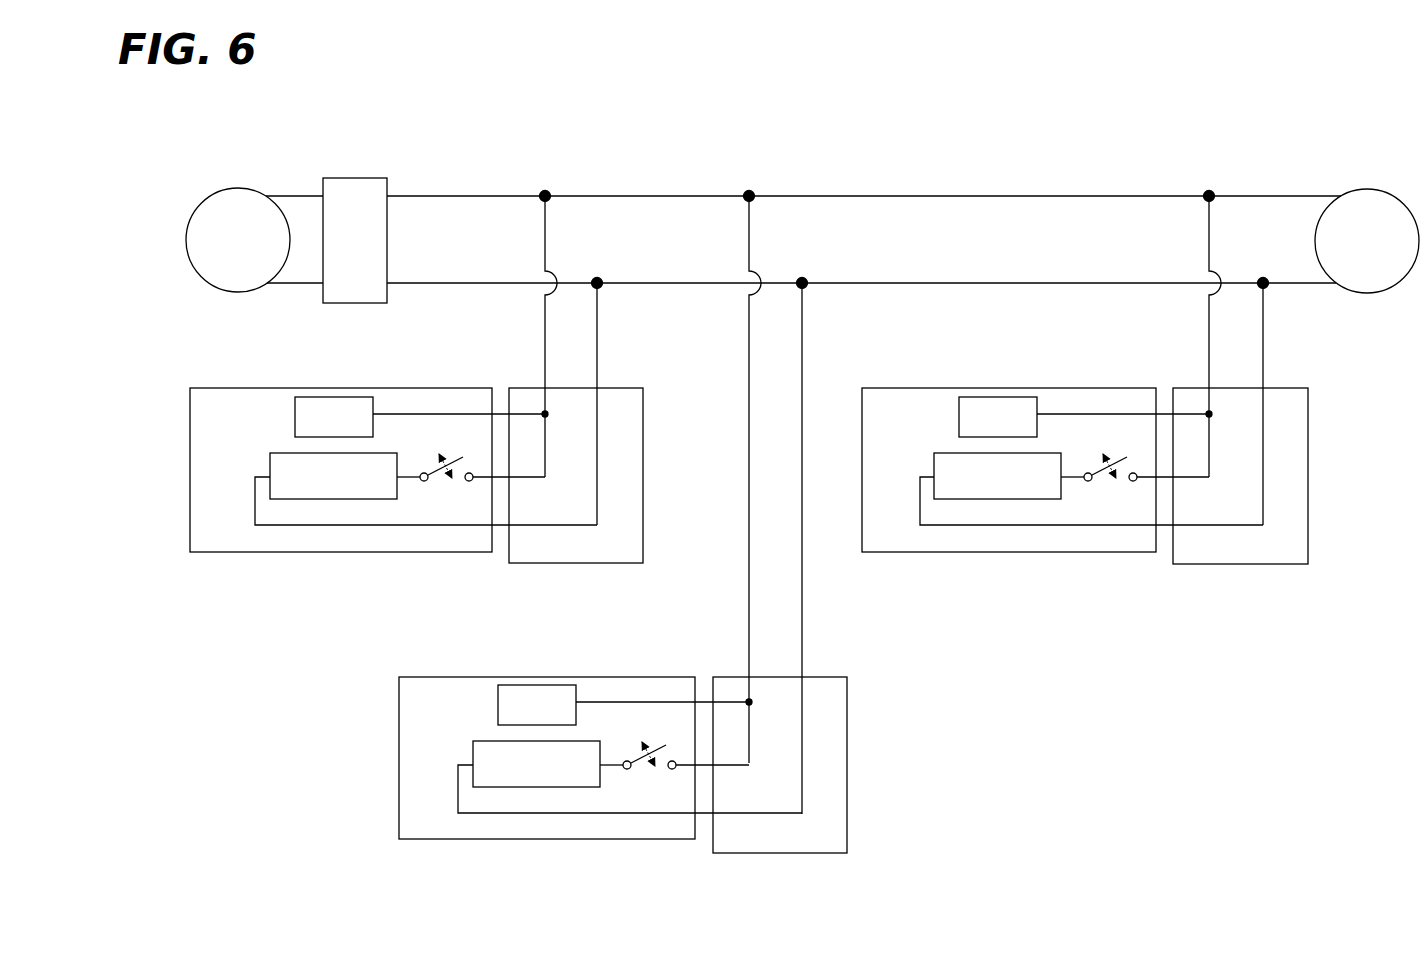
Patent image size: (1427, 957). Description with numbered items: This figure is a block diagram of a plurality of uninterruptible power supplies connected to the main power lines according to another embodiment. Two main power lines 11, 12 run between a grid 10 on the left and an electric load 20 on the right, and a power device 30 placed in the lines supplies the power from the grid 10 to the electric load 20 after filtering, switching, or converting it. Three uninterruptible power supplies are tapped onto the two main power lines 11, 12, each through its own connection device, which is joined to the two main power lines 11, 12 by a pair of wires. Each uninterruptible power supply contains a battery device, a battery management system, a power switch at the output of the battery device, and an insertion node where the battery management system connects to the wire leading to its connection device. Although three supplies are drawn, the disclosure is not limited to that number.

The grid 10 is at (238, 188).
The electric load 20 is at (1367, 189).
The power device 30 is at (355, 178).
The main power line 11 is at (428, 196).
The main power line 12 is at (428, 283).